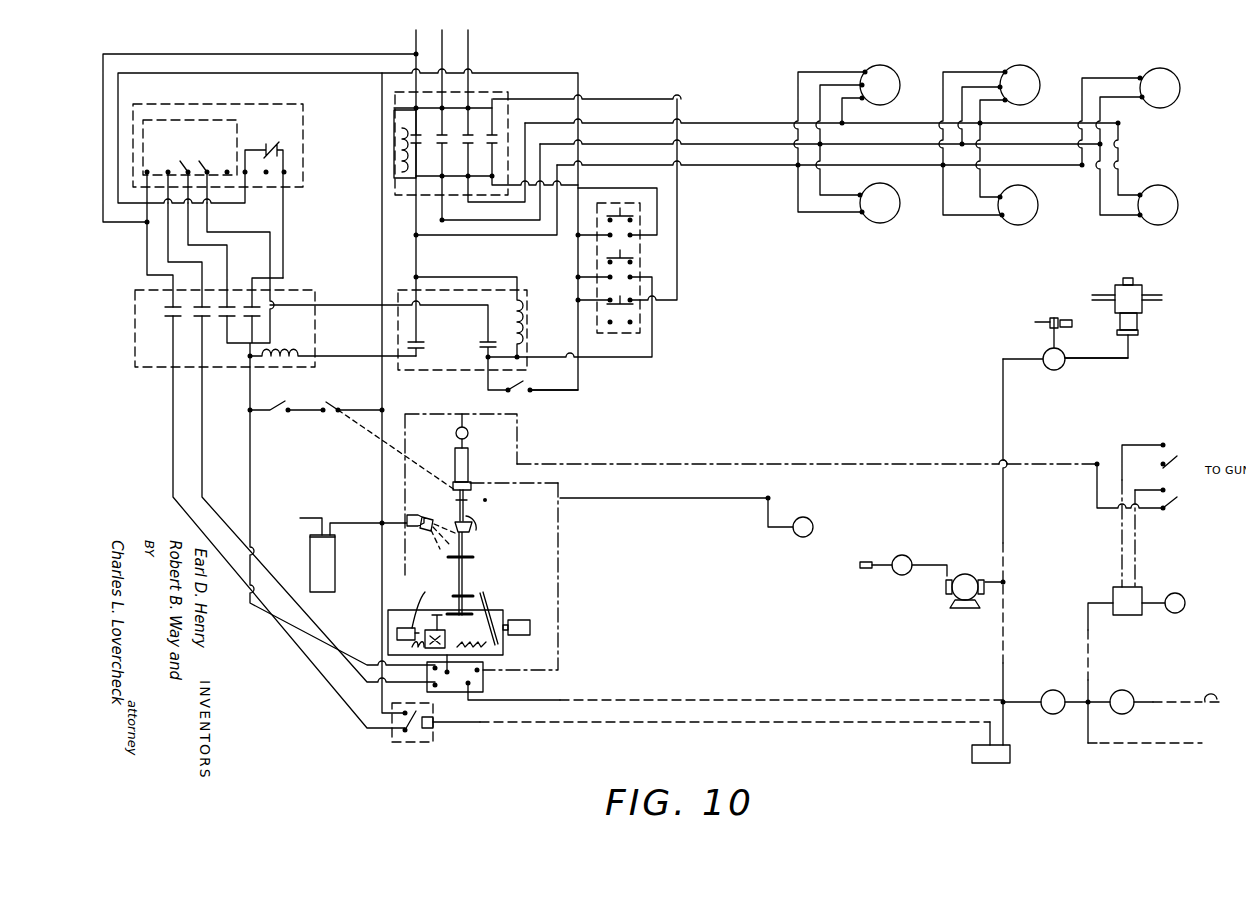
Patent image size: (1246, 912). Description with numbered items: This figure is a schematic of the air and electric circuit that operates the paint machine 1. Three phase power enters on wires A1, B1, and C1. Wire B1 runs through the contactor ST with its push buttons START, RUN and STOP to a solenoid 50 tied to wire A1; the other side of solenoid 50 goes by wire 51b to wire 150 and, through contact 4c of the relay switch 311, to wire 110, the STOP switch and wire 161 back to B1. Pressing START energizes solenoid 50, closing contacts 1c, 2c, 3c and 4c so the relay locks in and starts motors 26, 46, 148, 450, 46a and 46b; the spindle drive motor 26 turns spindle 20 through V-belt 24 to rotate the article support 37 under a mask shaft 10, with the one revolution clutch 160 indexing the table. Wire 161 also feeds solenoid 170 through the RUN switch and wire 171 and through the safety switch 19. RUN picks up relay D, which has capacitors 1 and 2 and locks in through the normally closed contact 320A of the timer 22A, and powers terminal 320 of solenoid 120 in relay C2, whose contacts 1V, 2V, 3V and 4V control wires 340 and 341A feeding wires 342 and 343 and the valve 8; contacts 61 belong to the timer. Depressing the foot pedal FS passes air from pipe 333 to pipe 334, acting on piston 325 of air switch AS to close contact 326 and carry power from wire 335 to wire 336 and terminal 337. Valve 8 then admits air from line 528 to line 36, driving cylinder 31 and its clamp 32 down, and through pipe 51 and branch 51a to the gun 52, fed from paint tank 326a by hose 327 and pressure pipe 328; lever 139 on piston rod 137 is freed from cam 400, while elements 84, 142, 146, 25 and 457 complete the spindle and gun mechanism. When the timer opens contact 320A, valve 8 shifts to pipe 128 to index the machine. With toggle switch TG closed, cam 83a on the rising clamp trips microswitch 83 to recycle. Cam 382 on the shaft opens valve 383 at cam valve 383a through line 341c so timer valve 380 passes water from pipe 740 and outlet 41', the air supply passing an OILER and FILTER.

The timer 22A is at (285, 108).
The timer contacts 61 is at (215, 165).
The normally closed contact 320A is at (286, 150).
The solenoid 50 is at (395, 143).
The relay switch 311 is at (394, 164).
The wire A1 is at (424, 186).
The wire B1 is at (488, 126).
The wire C1 is at (494, 116).
The contact 1c is at (409, 122).
The contact 2c is at (435, 122).
The contact 3c is at (461, 122).
The contact 4c is at (529, 142).
The wire 51b is at (478, 175).
The wire 161 is at (552, 75).
The wire 150 is at (625, 190).
The wire 110 is at (673, 230).
The Start push button START is at (632, 226).
The contactor ST is at (636, 250).
The Run push button RUN is at (632, 268).
The Stop push button STOP is at (632, 309).
The wire 171 is at (655, 343).
The relay D is at (443, 372).
The paint machine 1 is at (417, 340).
The capacitor 2 is at (389, 345).
The solenoid 170 is at (522, 325).
The No switch 19 is at (518, 395).
The wire 340 is at (146, 243).
The wire 341A is at (166, 244).
The relay C2 is at (302, 290).
The contact 1V is at (177, 305).
The contact 2V is at (205, 305).
The capacitor 3V is at (231, 305).
The capacitor 4V is at (255, 305).
The solenoid 120 is at (279, 351).
The terminal 320 is at (307, 360).
The terminal 337 is at (249, 359).
The toggle switch TG is at (279, 415).
The microswitch 83 is at (332, 416).
The wire 343 is at (168, 475).
The wire 342 is at (199, 468).
The wire 336 is at (304, 661).
The pipe 328 is at (301, 517).
The paint supply tank 326a is at (310, 551).
The hose 327 is at (350, 527).
The wire 335 is at (379, 588).
The contact 326 is at (386, 728).
The piston 325 is at (432, 728).
The air switch AS is at (412, 738).
The valve 8 is at (455, 688).
The line 528 is at (808, 690).
The pipe 334 is at (856, 730).
The foot pedal FS is at (991, 766).
The pipe 51 is at (410, 513).
The gun valve 51a is at (1170, 510).
The gun 52 is at (426, 537).
The cylinder 31 is at (468, 450).
The solenoid base 84 is at (458, 487).
The clamp 32 is at (460, 499).
The cam 83a is at (475, 509).
The mask carrying member 10 is at (470, 536).
The article support 37 is at (474, 553).
The article supporting spindle 20 is at (465, 583).
The cam 400 is at (478, 593).
The lever 139 is at (496, 583).
The piston rod 137 is at (507, 620).
The arm 142 is at (431, 599).
The solenoid 146 is at (404, 625).
The latch 25 is at (437, 621).
The V-belt 24 is at (464, 637).
The line 36 is at (411, 563).
The pipe 128 is at (560, 622).
The motor 148 is at (892, 83).
The motor 46 is at (884, 224).
The motor 26 is at (1010, 70).
The motor 46a is at (1030, 222).
The motor 450 is at (1170, 95).
The motor 46b is at (1175, 195).
The one revolution clutch 160 is at (809, 516).
The paint gun oscillating motor 457 is at (956, 591).
The pipe 333 is at (1016, 696).
The oiler OILER is at (1046, 713).
The filter FILTER is at (1115, 690).
The timer valve 380 is at (1137, 285).
The pipe 740 is at (1105, 277).
The water line 41' is at (1178, 297).
The cam operated valve 383a is at (1044, 353).
The valve 383 is at (1030, 333).
The cam 382 is at (1066, 320).
The air line 341c is at (1080, 358).